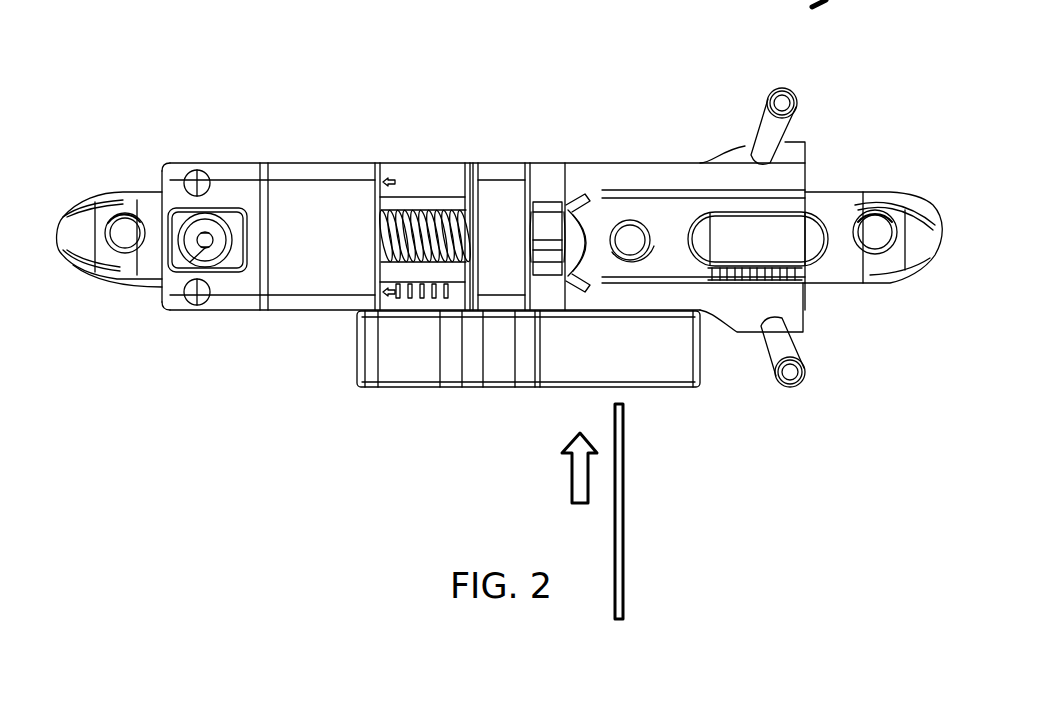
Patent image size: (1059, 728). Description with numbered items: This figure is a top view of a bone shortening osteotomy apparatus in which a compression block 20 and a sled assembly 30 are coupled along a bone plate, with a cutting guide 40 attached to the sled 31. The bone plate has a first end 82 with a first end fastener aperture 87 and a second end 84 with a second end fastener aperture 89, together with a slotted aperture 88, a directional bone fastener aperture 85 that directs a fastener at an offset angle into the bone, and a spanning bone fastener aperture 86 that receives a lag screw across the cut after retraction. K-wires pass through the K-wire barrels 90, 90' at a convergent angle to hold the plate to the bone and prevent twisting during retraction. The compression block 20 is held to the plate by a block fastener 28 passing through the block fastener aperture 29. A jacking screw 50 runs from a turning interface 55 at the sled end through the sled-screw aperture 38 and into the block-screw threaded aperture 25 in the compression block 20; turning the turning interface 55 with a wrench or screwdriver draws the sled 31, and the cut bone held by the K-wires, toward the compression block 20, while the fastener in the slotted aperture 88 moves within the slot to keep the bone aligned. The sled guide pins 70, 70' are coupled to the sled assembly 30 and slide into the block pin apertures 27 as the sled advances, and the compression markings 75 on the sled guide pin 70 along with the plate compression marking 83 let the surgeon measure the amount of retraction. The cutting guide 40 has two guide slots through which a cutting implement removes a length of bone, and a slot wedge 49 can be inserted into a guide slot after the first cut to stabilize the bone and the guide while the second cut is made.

The compression block 20 is at (267, 190).
The block-screw threaded aperture 25 is at (412, 210).
The block pin apertures 27 is at (380, 200).
The block fastener 28 is at (245, 268).
The block fastener aperture 29 is at (170, 285).
The sled assembly 30 is at (787, 163).
The sled 31 is at (707, 297).
The sled-screw aperture 38 is at (476, 185).
The cutting guide 40 is at (447, 368).
The slot wedge 49 is at (625, 492).
The jacking screw 50 is at (425, 215).
The turning interface 55 is at (547, 215).
The sled guide pin 70 is at (438, 120).
The sled guide pin 70' is at (334, 344).
The compression markings 75 is at (430, 288).
The first end 82 is at (67, 233).
The plate compression marking 83 is at (797, 265).
The second end 84 is at (923, 232).
The directional bone fastener aperture 85 is at (630, 240).
The spanning bone fastener aperture 86 is at (596, 223).
The first end fastener aperture 87 is at (130, 230).
The slotted aperture 88 is at (797, 228).
The second end fastener aperture 89 is at (875, 225).
The K-wire barrel 90 is at (747, 87).
The K-wire barrel 90' is at (783, 411).